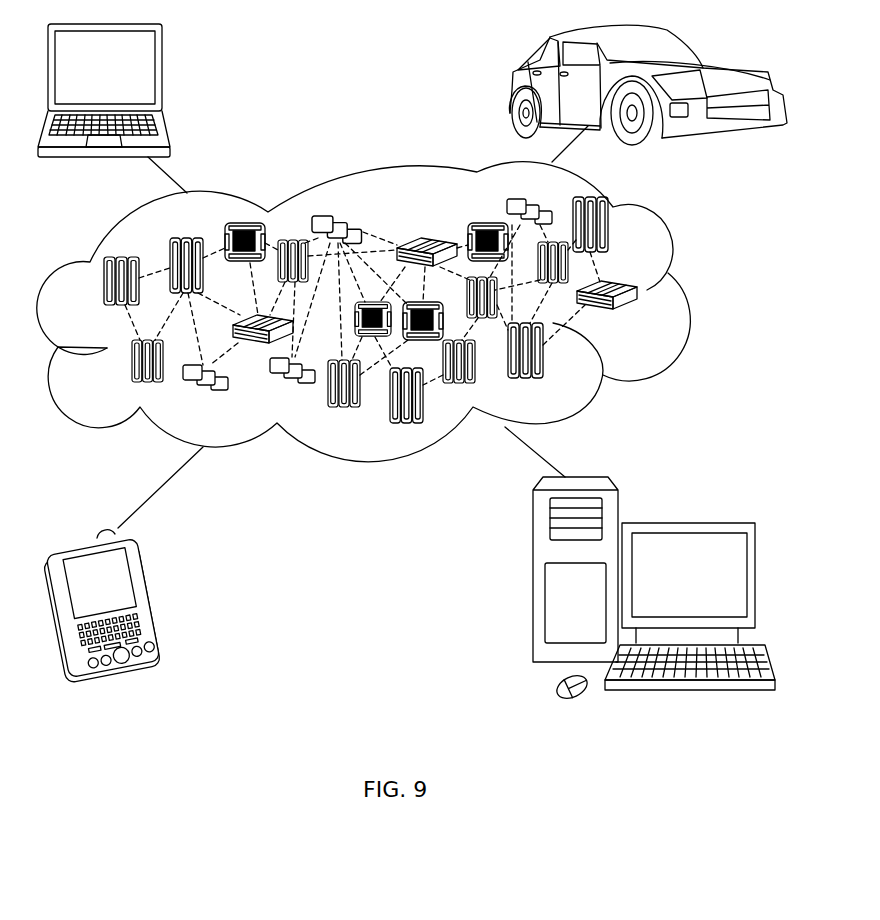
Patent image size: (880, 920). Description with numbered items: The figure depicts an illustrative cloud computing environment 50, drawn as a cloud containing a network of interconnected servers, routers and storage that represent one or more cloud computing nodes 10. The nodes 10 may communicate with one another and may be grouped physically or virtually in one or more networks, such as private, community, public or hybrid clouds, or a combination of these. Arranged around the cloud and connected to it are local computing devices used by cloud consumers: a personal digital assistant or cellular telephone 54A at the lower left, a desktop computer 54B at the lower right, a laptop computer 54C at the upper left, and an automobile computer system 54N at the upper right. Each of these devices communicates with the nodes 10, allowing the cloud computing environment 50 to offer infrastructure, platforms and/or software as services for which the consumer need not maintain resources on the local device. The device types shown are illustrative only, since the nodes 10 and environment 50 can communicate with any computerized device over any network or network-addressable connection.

The cloud computing node 10 is at (641, 318).
The cloud computing environment 50 is at (690, 291).
The personal digital assistant (PDA) or cellular telephone 54A is at (155, 600).
The desktop computer 54B is at (693, 523).
The laptop computer 54C is at (162, 73).
The automobile computer system 54N is at (512, 90).